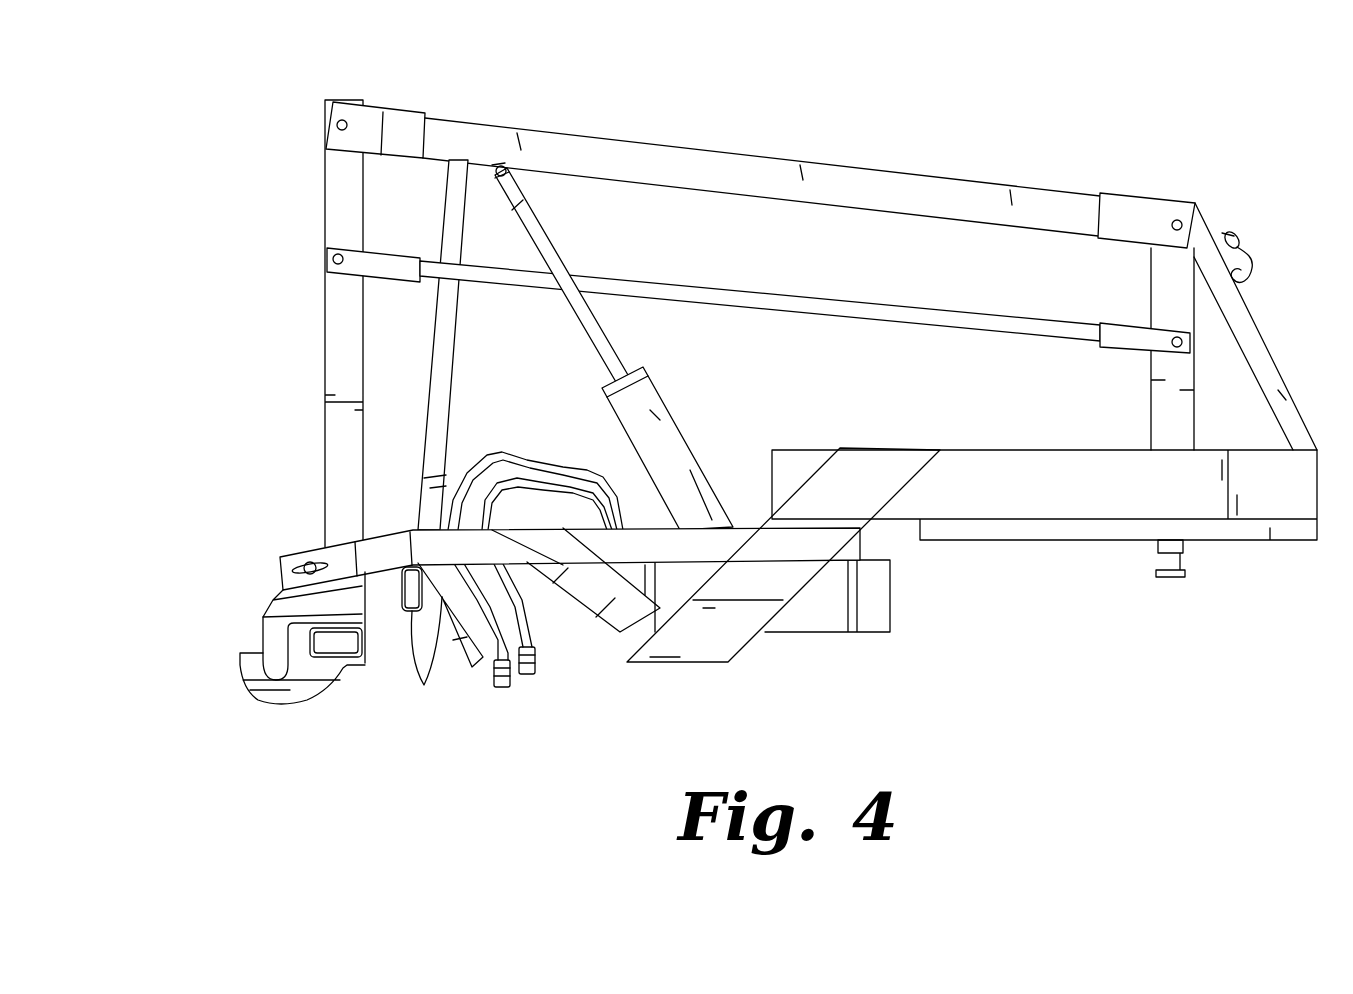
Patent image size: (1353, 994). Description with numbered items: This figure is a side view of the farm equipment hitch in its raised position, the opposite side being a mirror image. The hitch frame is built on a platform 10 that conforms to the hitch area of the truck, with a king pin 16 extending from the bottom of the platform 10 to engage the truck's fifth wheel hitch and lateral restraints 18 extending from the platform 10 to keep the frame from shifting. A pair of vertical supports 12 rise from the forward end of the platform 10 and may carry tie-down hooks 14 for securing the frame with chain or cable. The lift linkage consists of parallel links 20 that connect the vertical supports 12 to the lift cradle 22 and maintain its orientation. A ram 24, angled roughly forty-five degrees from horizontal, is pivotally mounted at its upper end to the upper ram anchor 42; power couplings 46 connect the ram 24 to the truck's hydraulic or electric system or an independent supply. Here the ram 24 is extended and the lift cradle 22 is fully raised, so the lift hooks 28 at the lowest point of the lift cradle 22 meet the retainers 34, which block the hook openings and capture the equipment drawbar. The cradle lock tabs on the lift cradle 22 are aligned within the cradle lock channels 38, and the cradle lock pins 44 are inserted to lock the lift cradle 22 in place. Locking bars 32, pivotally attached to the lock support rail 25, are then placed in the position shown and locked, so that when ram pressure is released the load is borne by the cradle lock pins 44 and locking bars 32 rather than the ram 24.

The platform 10 is at (1030, 505).
The vertical supports 12 is at (1155, 376).
The tie-down hooks 14 is at (1260, 270).
The king pin 16 is at (1172, 578).
The lateral restraints 18 is at (675, 648).
The parallel links 20 is at (591, 284).
The lift cradle 22 is at (337, 355).
The ram 24 is at (662, 407).
The lock support rail 25 is at (442, 645).
The lift hooks 28 is at (250, 658).
The locking bars 32 is at (443, 235).
The retainers 34 is at (270, 600).
The cradle lock channels 38 is at (313, 547).
The upper ram anchor 42 is at (484, 160).
The cradle lock pins 44 is at (282, 560).
The power couplings 46 is at (502, 687).